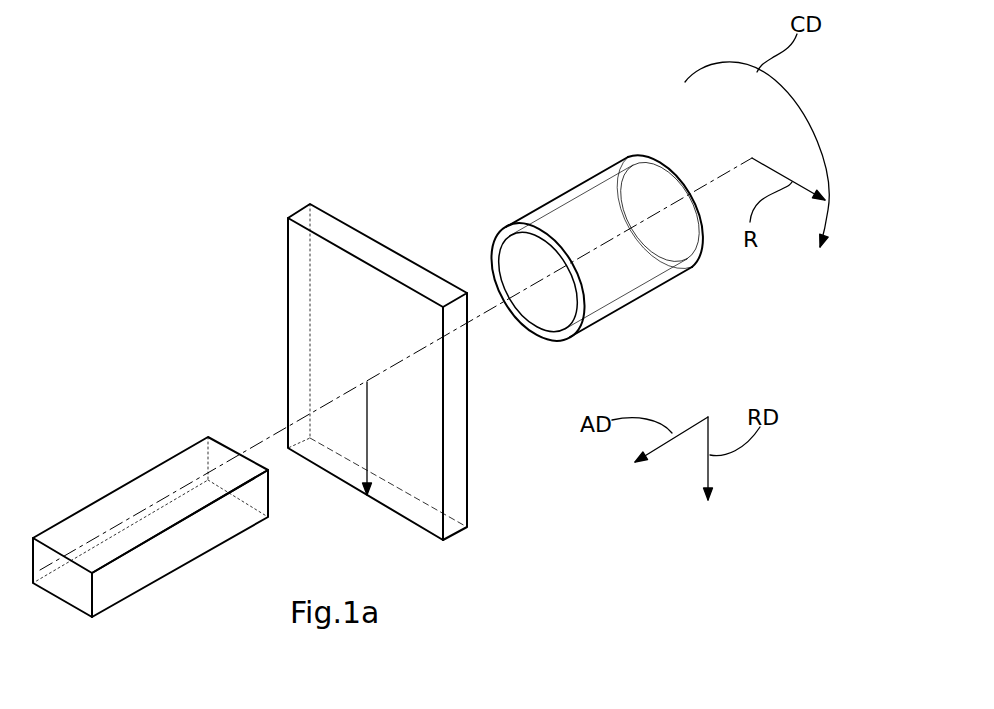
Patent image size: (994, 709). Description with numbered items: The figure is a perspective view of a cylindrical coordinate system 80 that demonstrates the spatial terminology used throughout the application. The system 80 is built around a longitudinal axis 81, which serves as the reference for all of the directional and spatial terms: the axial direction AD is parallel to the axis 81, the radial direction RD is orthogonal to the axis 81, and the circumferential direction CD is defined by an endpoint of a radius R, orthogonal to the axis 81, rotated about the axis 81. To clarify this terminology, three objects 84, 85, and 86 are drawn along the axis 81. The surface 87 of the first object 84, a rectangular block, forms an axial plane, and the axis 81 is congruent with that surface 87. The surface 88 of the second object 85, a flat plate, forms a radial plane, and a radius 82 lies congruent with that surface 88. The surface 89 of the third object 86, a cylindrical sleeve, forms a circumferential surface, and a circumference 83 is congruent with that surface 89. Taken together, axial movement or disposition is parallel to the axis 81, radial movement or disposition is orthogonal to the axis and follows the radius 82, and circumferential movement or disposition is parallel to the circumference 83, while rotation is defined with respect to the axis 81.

The cylindrical coordinate system 80 is at (245, 252).
The longitudinal axis 81 is at (692, 190).
The radius 82 is at (367, 435).
The circumference 83 is at (490, 248).
The object 84 is at (125, 603).
The object 85 is at (473, 528).
The object 86 is at (618, 312).
The surface 87 is at (113, 508).
The surface 88 is at (302, 332).
The surface 89 is at (567, 190).